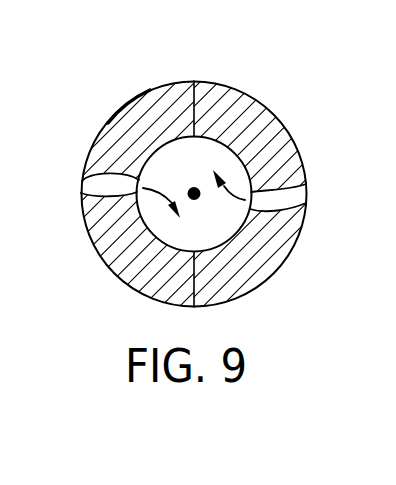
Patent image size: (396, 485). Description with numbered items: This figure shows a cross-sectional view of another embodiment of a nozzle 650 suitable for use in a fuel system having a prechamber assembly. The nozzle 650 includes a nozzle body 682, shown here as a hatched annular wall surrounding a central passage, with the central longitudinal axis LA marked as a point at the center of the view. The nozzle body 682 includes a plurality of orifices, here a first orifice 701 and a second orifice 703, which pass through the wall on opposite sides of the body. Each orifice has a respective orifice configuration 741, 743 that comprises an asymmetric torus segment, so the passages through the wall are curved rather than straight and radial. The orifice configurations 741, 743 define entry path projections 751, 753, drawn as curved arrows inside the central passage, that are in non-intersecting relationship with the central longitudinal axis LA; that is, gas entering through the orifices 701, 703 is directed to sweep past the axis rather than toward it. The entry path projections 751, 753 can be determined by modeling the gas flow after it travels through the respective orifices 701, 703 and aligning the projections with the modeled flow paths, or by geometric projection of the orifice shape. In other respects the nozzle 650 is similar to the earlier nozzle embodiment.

The nozzle 650 is at (78, 100).
The nozzle body 682 is at (118, 270).
The orifice 701 is at (108, 174).
The orifice 703 is at (292, 210).
The orifice configuration 741 is at (132, 198).
The orifice configuration 743 is at (293, 189).
The entry path projection 751 is at (160, 190).
The entry path projection 753 is at (237, 193).
The central longitudinal axis LA is at (194, 188).